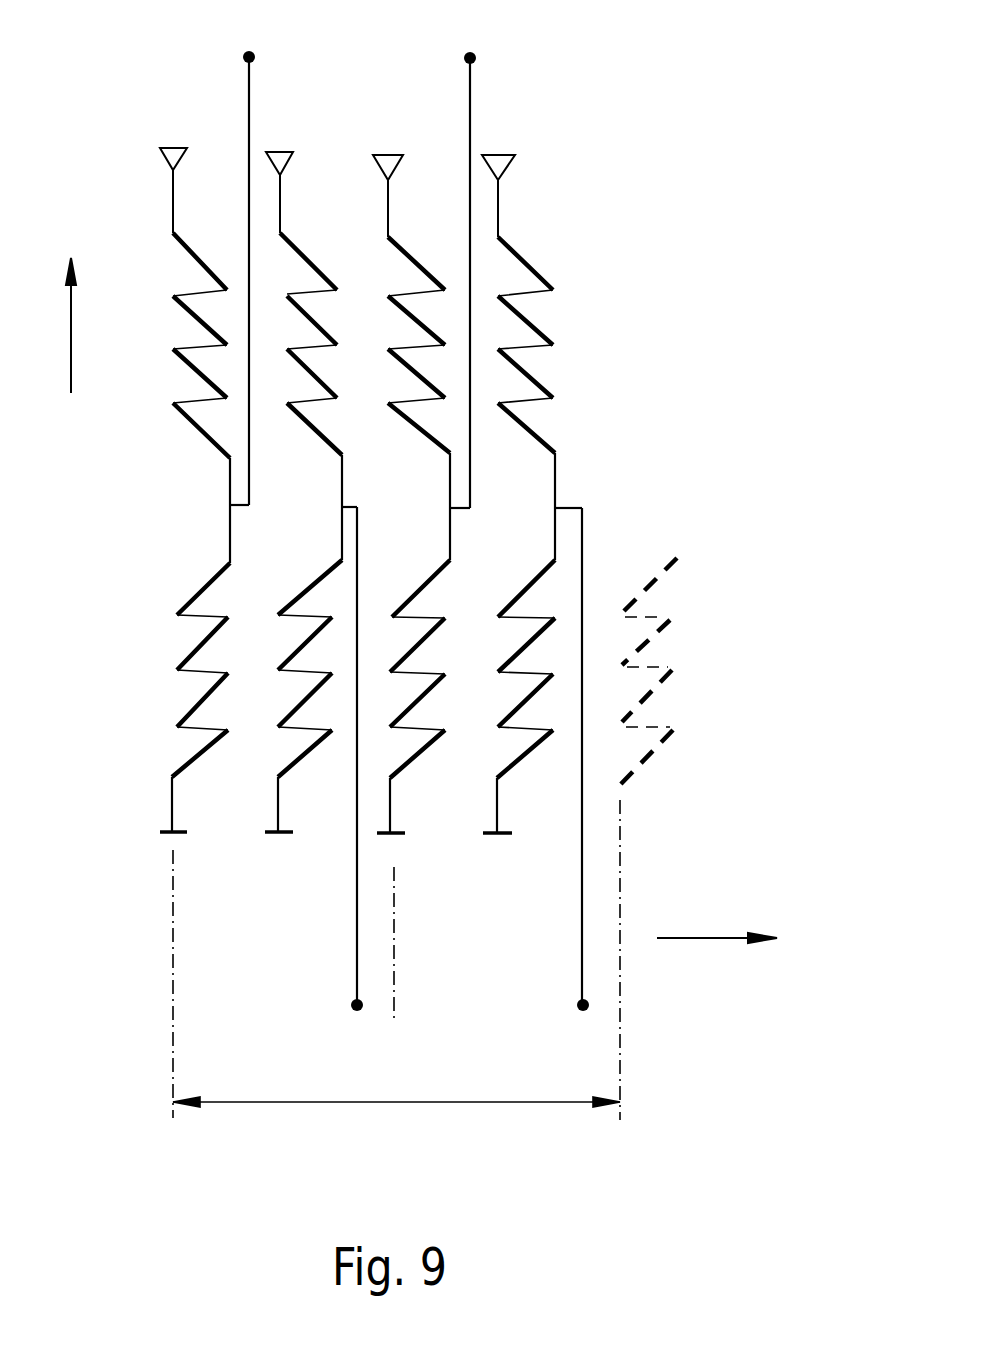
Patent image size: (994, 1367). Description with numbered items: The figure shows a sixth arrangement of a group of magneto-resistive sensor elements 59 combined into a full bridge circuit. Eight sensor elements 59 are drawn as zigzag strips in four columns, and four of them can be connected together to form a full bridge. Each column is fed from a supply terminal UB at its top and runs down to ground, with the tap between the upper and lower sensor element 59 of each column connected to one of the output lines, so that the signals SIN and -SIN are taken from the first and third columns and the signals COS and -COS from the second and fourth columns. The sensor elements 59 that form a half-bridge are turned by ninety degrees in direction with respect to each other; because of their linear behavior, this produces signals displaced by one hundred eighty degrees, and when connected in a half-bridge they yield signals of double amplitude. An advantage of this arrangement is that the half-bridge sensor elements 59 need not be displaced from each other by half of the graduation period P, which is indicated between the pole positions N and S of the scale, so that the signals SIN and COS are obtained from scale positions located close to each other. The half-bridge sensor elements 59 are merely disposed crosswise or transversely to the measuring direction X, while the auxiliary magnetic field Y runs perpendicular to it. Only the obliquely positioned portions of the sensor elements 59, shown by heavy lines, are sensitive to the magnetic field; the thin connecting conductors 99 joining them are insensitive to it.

The sensor element 59 is at (200, 262).
The connecting conductor 99 is at (210, 405).
The supply voltage terminal UB is at (168, 100).
The signal SIN is at (367, 255).
The signal COS is at (431, 766).
The north pole position N is at (398, 984).
The south pole position S is at (396, 970).
The graduation period P is at (396, 1084).
The measuring direction X is at (717, 918).
The auxiliary magnetic field Y is at (59, 325).